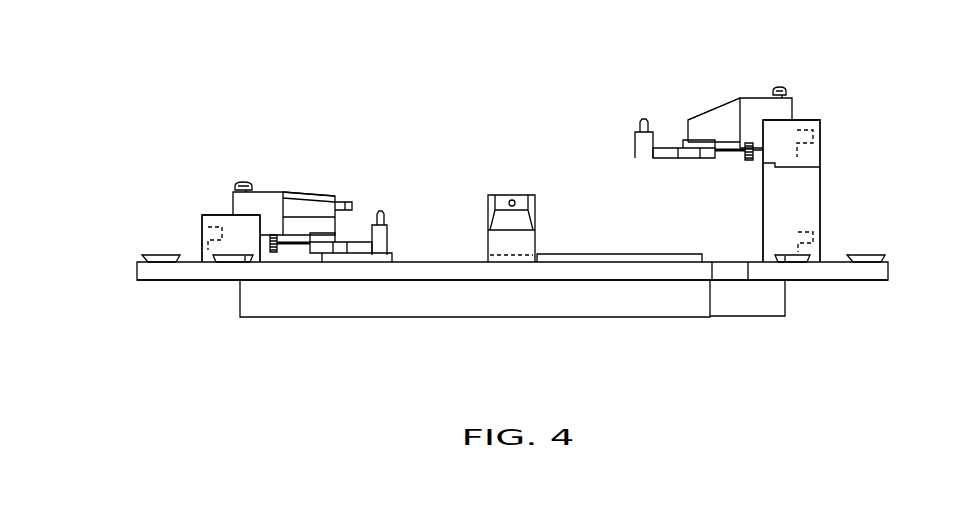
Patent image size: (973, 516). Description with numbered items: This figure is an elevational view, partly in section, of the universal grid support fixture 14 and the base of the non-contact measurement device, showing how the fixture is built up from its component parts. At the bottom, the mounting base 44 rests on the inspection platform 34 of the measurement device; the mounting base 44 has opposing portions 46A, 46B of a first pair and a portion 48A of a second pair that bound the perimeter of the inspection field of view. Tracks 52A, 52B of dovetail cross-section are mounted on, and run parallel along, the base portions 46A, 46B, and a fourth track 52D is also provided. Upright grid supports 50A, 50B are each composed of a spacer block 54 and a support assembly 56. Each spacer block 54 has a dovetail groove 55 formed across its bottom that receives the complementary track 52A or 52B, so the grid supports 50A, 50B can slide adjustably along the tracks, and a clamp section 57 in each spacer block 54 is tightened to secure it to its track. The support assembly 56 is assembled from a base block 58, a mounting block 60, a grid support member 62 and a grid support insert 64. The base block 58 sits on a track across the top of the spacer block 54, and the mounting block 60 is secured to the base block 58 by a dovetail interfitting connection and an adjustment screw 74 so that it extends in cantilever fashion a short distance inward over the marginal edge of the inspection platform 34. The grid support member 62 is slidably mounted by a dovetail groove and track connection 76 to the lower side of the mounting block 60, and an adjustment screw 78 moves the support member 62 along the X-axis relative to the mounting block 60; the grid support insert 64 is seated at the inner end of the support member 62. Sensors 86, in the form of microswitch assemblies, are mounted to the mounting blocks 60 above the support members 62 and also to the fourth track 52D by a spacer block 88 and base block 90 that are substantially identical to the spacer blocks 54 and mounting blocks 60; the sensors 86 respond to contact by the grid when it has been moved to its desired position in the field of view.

The universal grid support fixture 14 is at (461, 331).
The inspection platform 34 is at (314, 292).
The mounting base 44 is at (178, 284).
The mounting base portion 46A is at (137, 264).
The mounting base portion 46B is at (876, 272).
The mounting base portion 48A is at (636, 270).
The upright grid support 50A is at (206, 211).
The upright grid support 50B is at (833, 157).
The track 52A is at (226, 260).
The track 52B is at (792, 254).
The fourth track 52D is at (570, 258).
The spacer block 54 is at (225, 222).
The groove 55 is at (243, 256).
The support assembly 56 is at (302, 189).
The clamp section 57 is at (205, 233).
The base block 58 is at (275, 192).
The mounting block 60 is at (318, 193).
The grid support member 62 is at (363, 251).
The grid support insert 64 is at (381, 212).
The adjustment screw 74 is at (243, 180).
The dovetail groove and track connection 76 is at (333, 243).
The adjustment screw 78 is at (273, 253).
The sensor 86 is at (340, 202).
The spacer block 88 is at (492, 242).
The base block 90 is at (538, 206).